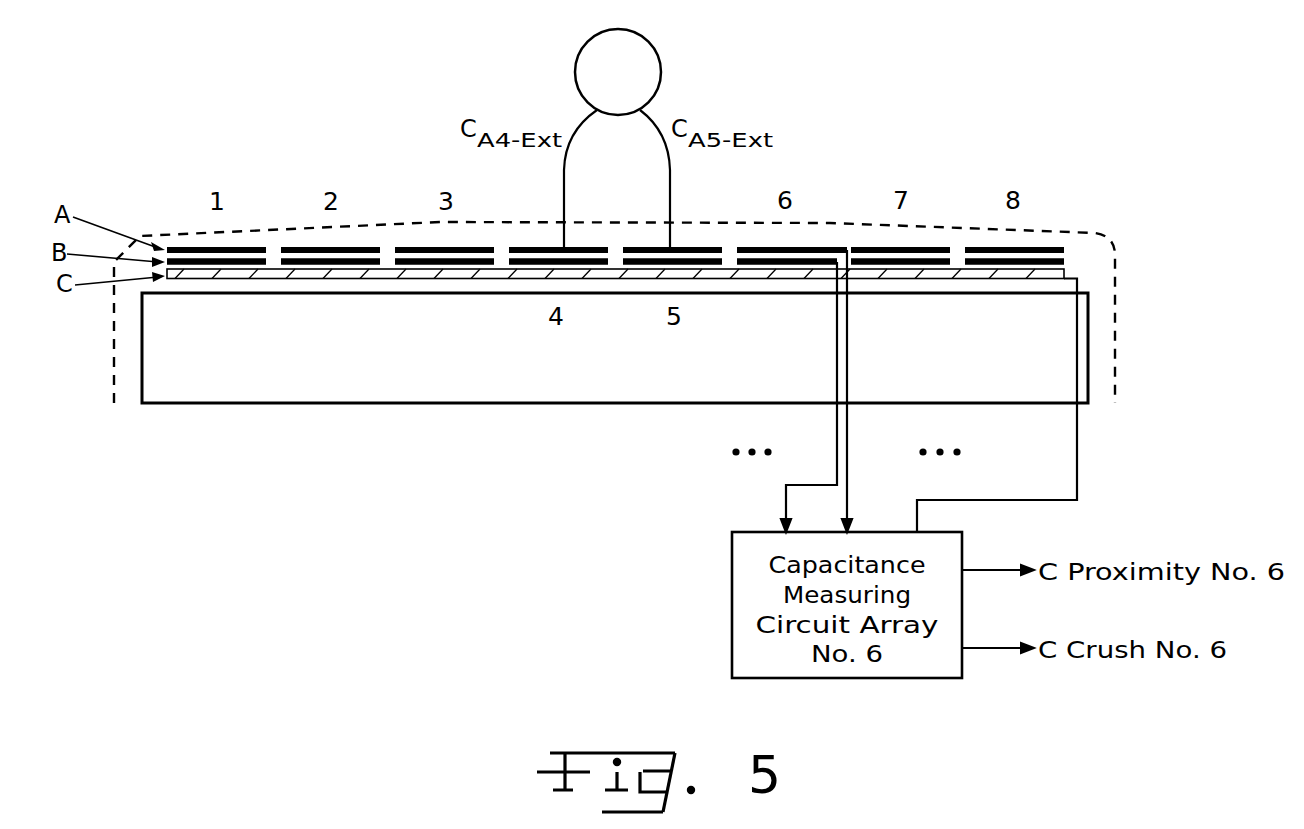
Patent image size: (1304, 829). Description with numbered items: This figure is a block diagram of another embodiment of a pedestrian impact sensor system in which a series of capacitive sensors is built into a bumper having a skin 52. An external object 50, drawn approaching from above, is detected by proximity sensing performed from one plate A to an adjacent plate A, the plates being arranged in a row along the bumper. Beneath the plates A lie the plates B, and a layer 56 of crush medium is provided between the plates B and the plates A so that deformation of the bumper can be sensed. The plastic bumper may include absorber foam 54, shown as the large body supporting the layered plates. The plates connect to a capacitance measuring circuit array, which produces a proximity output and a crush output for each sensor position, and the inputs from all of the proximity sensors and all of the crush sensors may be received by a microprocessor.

The external object 50 is at (642, 89).
The skin 52 is at (1106, 232).
The absorber foam 54 is at (373, 403).
The layer of crush medium 56 is at (226, 281).